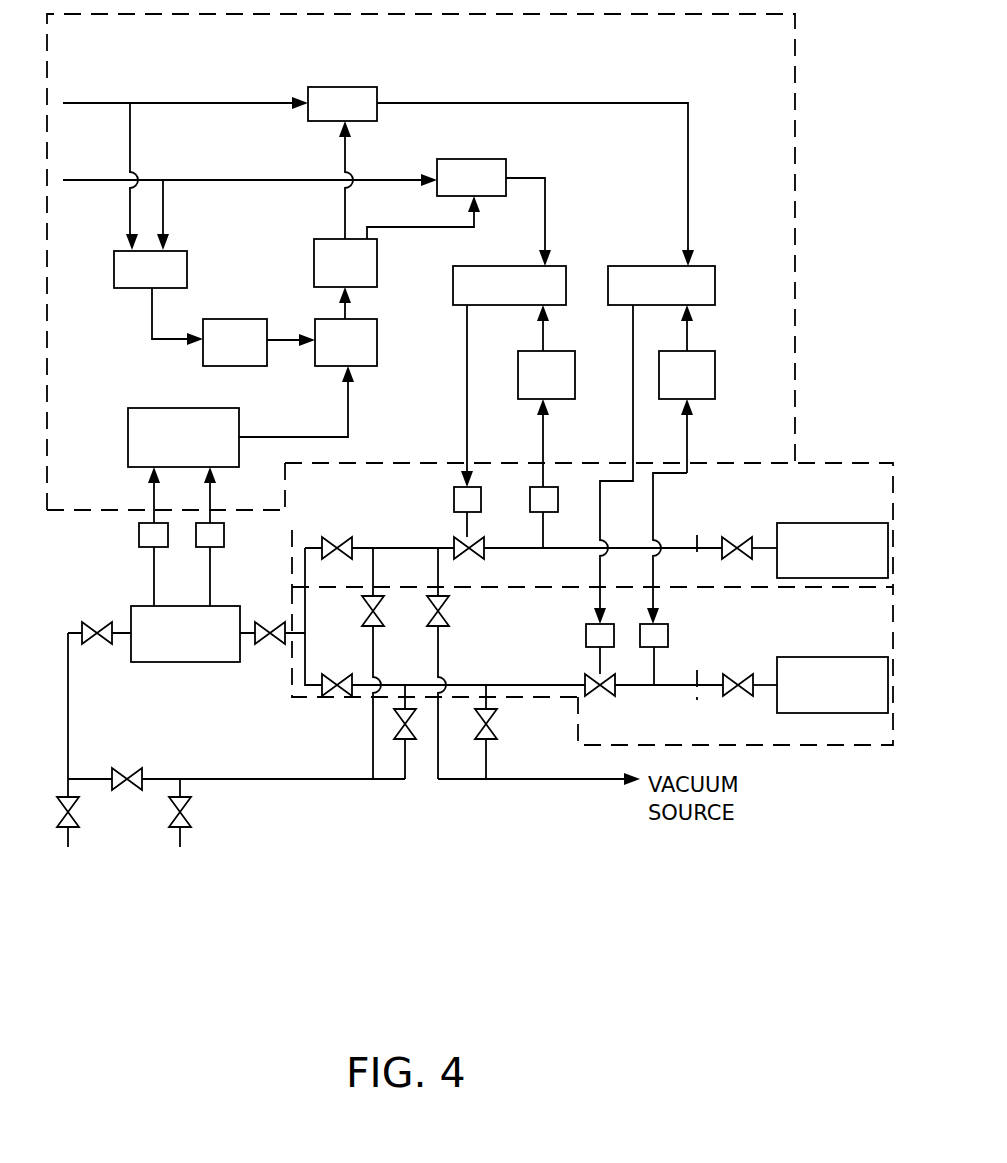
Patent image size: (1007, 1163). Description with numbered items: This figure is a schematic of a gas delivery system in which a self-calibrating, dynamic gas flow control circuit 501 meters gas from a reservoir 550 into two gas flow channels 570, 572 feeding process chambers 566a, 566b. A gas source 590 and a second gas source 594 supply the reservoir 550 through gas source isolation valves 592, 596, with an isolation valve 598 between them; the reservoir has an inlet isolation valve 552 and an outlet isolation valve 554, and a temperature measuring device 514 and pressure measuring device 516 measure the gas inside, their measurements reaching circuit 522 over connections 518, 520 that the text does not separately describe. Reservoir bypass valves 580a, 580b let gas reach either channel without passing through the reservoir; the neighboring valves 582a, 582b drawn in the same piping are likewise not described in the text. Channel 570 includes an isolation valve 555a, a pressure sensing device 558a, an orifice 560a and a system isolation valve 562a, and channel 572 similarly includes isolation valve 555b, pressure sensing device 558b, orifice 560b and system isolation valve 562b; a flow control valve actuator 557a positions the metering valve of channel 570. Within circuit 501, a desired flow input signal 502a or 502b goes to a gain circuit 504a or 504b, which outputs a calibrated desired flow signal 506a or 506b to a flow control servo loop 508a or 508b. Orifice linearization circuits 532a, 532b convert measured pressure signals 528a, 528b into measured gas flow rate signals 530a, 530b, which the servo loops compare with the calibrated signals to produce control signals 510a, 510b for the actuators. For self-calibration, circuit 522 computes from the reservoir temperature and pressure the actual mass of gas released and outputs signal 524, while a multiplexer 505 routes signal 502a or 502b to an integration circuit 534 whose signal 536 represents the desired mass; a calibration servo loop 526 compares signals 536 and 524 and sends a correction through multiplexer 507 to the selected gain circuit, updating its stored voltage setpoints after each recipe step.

The self-calibrating dynamic gas flow control circuit 501 is at (766, 56).
The desired flow input signal 502a is at (83, 103).
The desired flow input signal 502b is at (83, 180).
The gain circuit 504a is at (342, 104).
The gain circuit 504b is at (471, 177).
The multiplexer 505 is at (150, 269).
The calibrated desired flow signal 506a is at (503, 103).
The calibrated desired flow signal 506b is at (545, 205).
The multiplexer 507 is at (397, 204).
The flow control servo loop 508a is at (661, 285).
The flow control servo loop 508b is at (509, 285).
The control signal 510a is at (633, 405).
The control signal 510b is at (467, 365).
The temperature measuring device 514 is at (139, 537).
The pressure measuring device 516 is at (224, 537).
The temperature signal line 518 is at (154, 489).
The pressure signal line 520 is at (210, 492).
The circuit 522 is at (183, 437).
The output signal 524 is at (348, 406).
The calibration servo loop 526 is at (346, 326).
The measured pressure signal 528a is at (687, 452).
The measured pressure signal 528b is at (543, 430).
The measured gas flow rate signal 530a is at (687, 332).
The measured gas flow rate signal 530b is at (543, 323).
The orifice linearization circuit 532a is at (687, 375).
The orifice linearization circuit 532b is at (546, 375).
The integration circuit 534 is at (209, 327).
The signal 536 is at (288, 341).
The reservoir 550 is at (185, 634).
The inlet isolation valve 552 is at (100, 645).
The outlet isolation valve 554 is at (272, 645).
The isolation valve 555a is at (337, 697).
The isolation valve 555b is at (337, 537).
The flow control valve actuator 557a is at (586, 632).
The pressure sensing device 558a is at (454, 507).
The pressure sensing device 558b is at (541, 514).
The orifice 560a is at (690, 690).
The orifice 560b is at (697, 535).
The system isolation valve 562a is at (738, 697).
The system isolation valve 562b is at (745, 538).
The process chamber 566a is at (832, 685).
The process chamber 566b is at (832, 550).
The gas flow channel 570 is at (878, 744).
The gas flow channel 572 is at (881, 507).
The reservoir bypass valve 580a is at (410, 740).
The reservoir bypass valve 580b is at (362, 620).
The second vent valve 582a is at (495, 728).
The second bypass valve 582b is at (427, 620).
The gas source 590 is at (88, 892).
The gas source isolation valve 592 is at (80, 817).
The gas source 594 is at (208, 892).
The gas source isolation valve 596 is at (192, 817).
The isolation valve 598 is at (128, 768).